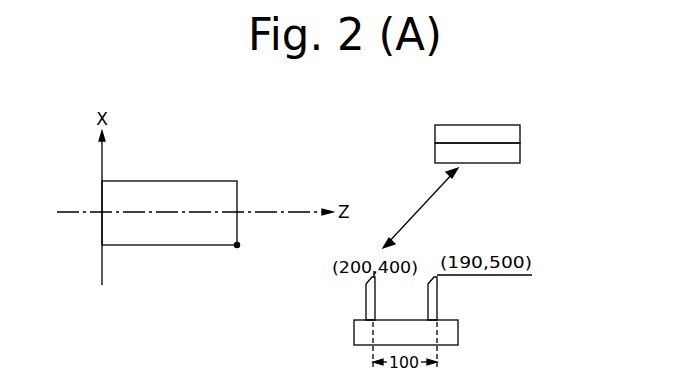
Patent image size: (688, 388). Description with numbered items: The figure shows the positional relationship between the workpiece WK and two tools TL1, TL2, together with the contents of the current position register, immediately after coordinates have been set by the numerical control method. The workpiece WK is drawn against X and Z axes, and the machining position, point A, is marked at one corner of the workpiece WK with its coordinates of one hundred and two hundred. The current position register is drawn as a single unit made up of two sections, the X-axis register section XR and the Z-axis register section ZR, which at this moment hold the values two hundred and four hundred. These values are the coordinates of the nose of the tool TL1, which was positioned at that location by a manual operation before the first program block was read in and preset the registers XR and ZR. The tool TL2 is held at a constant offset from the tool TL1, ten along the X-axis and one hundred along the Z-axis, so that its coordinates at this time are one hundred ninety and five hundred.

The workpiece WK is at (201, 181).
The machining position (point A) A is at (240, 245).
The X-axis current position register section XR is at (520, 133).
The Z-axis current position register section ZR is at (520, 157).
The first tool TL1 is at (366, 302).
The second tool TL2 is at (437, 302).